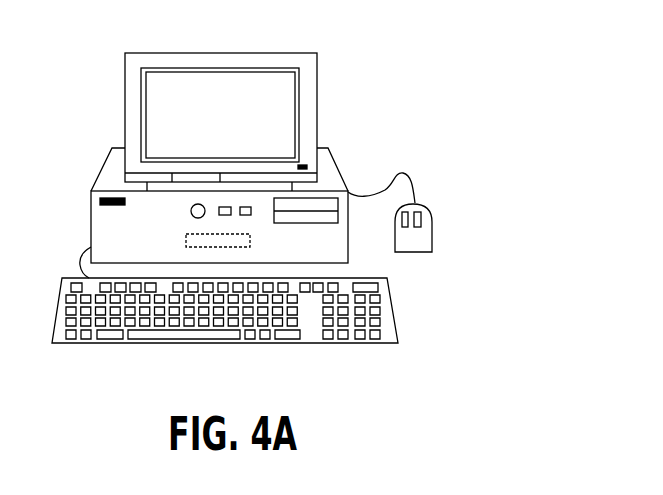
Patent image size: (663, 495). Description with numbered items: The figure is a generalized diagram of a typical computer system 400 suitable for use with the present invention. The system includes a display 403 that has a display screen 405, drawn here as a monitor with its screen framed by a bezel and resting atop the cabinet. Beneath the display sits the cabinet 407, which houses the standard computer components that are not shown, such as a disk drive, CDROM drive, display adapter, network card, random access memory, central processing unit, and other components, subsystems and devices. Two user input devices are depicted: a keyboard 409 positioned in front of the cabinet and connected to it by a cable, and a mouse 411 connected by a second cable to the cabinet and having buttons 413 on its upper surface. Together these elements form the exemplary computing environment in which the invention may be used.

The computer system 400 is at (480, 60).
The display 403 is at (318, 110).
The display screen 405 is at (287, 88).
The cabinet 407 is at (327, 167).
The keyboard 409 is at (100, 343).
The mouse 411 is at (422, 238).
The buttons 413 is at (421, 213).